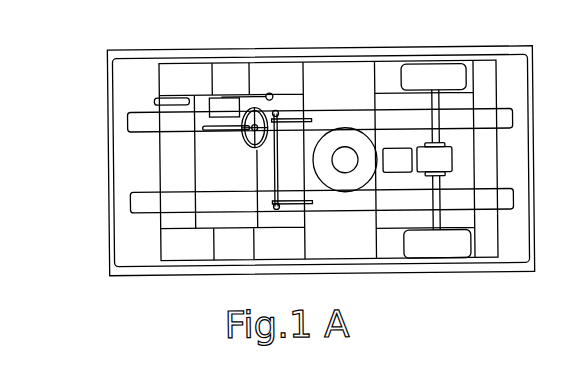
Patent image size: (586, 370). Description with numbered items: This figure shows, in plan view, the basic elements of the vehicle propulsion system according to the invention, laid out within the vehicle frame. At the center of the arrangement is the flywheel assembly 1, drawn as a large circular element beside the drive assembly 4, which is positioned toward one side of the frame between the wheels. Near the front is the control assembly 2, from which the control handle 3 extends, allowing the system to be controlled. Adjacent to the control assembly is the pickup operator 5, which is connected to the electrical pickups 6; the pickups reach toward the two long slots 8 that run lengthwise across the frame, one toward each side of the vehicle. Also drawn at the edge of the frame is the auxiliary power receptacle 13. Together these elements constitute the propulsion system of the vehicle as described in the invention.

The flywheel assembly 1 is at (338, 122).
The control assembly 2 is at (211, 95).
The control handle 3 is at (270, 91).
The drive assembly 4 is at (458, 154).
The pickup operator 5 is at (271, 157).
The electrical pickups 6 is at (289, 125).
The slots 8 is at (137, 120).
The auxiliary power receptacle 13 is at (147, 94).